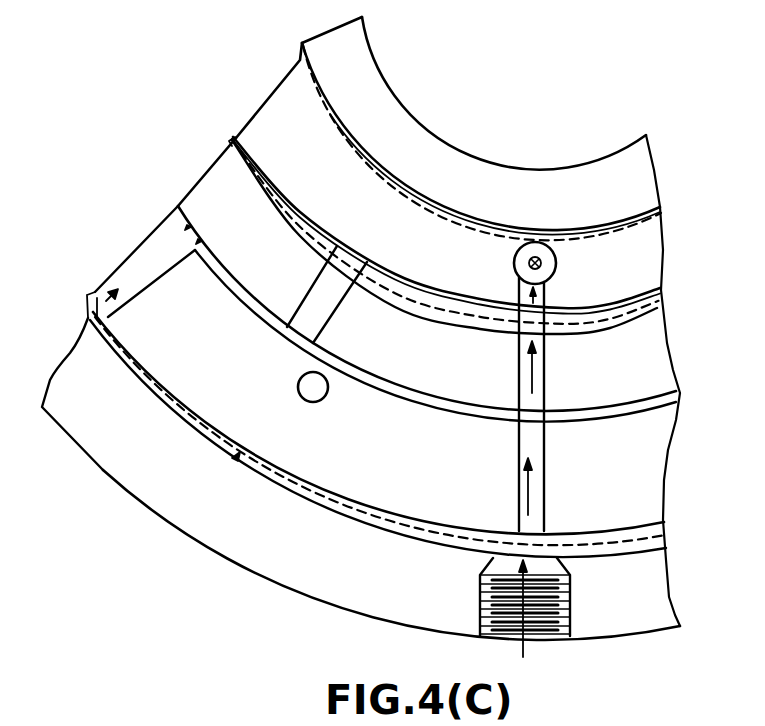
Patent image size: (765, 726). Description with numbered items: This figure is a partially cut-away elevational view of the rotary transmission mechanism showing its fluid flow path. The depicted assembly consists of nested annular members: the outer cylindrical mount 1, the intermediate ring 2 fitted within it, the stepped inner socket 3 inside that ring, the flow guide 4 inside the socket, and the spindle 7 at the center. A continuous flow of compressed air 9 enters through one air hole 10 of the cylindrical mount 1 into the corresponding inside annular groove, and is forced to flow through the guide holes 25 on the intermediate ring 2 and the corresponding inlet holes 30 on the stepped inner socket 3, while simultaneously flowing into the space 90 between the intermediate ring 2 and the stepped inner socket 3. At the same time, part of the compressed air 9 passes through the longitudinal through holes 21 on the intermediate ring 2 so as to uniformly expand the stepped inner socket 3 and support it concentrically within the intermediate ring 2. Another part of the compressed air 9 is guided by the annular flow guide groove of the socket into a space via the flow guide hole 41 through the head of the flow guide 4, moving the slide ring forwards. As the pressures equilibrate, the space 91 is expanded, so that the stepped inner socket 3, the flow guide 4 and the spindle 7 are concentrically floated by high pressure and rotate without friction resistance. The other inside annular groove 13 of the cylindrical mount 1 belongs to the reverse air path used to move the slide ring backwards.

The cylindrical mount 1 is at (668, 597).
The intermediate ring 2 is at (665, 470).
The stepped inner socket 3 is at (663, 357).
The flow guide 4 is at (661, 253).
The spindle 7 is at (648, 168).
The compressed air 9 is at (514, 263).
The air hole 10 is at (560, 632).
The inside annular groove 13 is at (664, 533).
The longitudinal through hole 21 is at (306, 388).
The guide hole 25 is at (545, 475).
The inlet hole 30 is at (545, 368).
The flow guide hole 41 is at (556, 268).
The space 90 is at (680, 393).
The space 91 is at (661, 289).